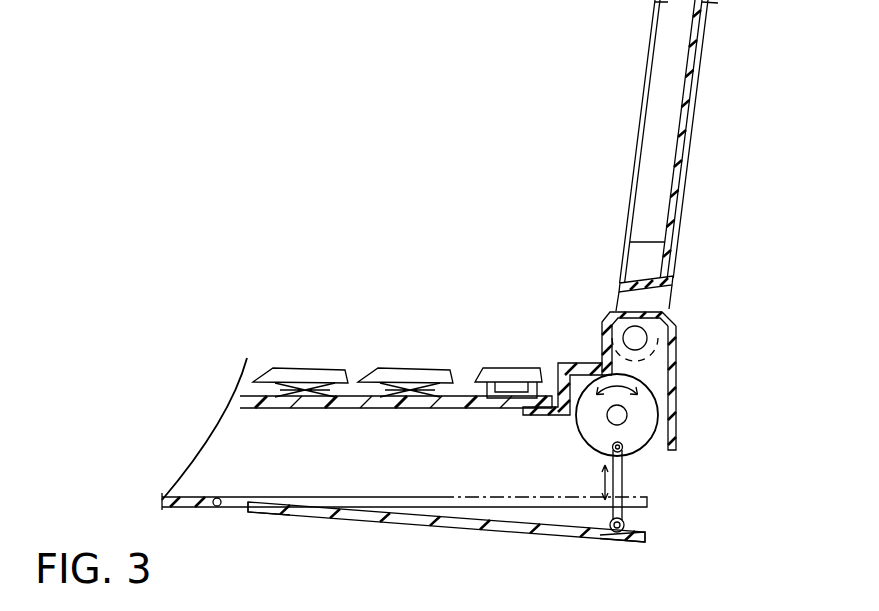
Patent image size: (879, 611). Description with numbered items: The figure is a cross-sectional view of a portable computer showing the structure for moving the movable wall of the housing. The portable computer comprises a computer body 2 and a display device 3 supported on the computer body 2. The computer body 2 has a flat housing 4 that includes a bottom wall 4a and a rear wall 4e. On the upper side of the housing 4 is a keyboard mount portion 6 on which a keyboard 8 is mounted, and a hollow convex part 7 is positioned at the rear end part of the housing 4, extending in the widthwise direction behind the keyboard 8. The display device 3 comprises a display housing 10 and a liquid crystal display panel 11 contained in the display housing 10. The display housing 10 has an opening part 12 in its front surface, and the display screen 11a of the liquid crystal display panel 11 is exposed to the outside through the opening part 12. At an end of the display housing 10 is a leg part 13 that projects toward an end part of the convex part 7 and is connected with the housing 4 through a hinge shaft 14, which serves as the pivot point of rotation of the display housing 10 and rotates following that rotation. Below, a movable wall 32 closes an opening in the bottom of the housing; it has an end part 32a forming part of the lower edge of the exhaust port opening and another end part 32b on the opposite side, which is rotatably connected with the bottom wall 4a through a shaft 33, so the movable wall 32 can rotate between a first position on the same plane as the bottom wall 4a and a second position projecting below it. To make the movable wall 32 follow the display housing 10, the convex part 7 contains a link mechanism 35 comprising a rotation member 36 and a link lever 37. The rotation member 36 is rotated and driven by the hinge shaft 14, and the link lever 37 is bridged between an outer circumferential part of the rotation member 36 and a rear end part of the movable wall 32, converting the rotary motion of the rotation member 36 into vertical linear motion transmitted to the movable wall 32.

The computer body 2 is at (247, 370).
The display device 3 is at (643, 61).
The housing 4 is at (188, 455).
The bottom wall 4a is at (165, 500).
The rear wall 4e is at (677, 382).
The keyboard mount portion 6 is at (560, 375).
The convex part 7 is at (605, 322).
The keyboard 8 is at (393, 368).
The display housing 10 is at (690, 182).
The liquid crystal display panel 11 is at (660, 142).
The display screen 11a is at (642, 110).
The opening part 12 is at (628, 215).
The leg part 13 is at (657, 302).
The hinge shaft 14 is at (647, 338).
The movable wall 32 is at (512, 520).
The end part 32a is at (640, 534).
The other end part 32b is at (228, 512).
The shaft 33 is at (222, 498).
The link mechanism 35 is at (676, 453).
The rotation member 36 is at (645, 428).
The link lever 37 is at (664, 487).